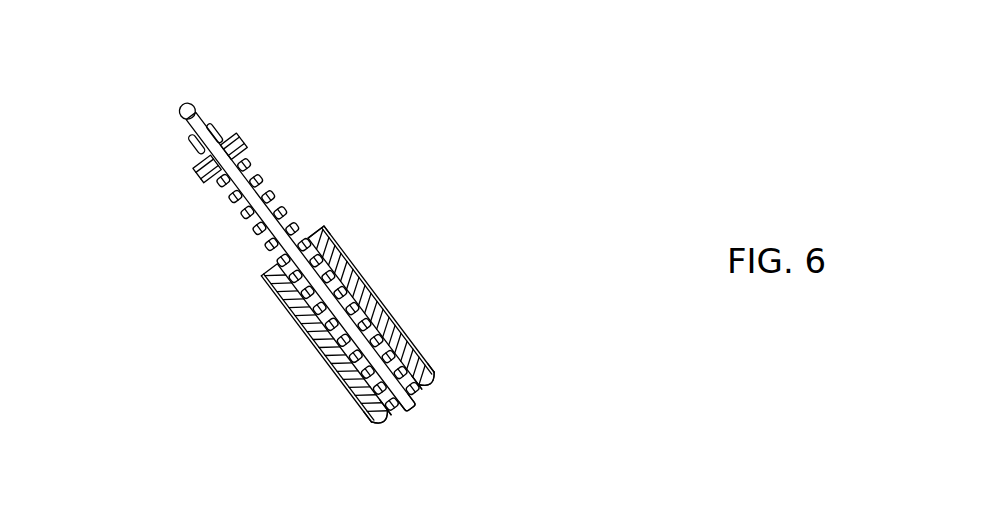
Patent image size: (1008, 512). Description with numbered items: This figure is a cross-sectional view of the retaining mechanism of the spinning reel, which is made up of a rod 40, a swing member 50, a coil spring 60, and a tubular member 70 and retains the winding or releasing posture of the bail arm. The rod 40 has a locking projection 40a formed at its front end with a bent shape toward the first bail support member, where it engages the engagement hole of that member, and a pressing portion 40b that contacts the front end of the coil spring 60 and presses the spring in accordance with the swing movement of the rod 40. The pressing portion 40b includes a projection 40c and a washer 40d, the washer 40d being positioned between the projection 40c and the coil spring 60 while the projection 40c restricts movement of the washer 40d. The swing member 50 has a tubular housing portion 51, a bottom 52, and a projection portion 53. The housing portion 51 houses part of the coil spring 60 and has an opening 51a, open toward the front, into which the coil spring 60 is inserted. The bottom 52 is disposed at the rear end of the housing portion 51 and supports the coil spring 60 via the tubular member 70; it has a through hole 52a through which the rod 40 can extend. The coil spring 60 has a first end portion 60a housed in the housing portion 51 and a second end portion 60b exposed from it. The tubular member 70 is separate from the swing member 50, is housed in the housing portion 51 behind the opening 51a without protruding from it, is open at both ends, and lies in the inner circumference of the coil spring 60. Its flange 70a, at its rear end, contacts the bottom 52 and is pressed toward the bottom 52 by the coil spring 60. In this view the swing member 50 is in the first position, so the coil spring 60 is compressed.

The rod 40 is at (203, 114).
The locking projection 40a is at (179, 113).
The pressing portion 40b is at (186, 174).
The projection 40c is at (196, 143).
The washer 40d is at (198, 168).
The swing member 50 is at (393, 304).
The housing portion 51 is at (386, 296).
The opening 51a is at (322, 228).
The bottom 52 is at (397, 417).
The through hole 52a is at (405, 403).
The projection portion 53 is at (318, 359).
The coil spring 60 is at (287, 191).
The first end portion 60a is at (433, 373).
The second end portion 60b is at (244, 134).
The tubular member 70 is at (293, 306).
The flange 70a is at (433, 373).